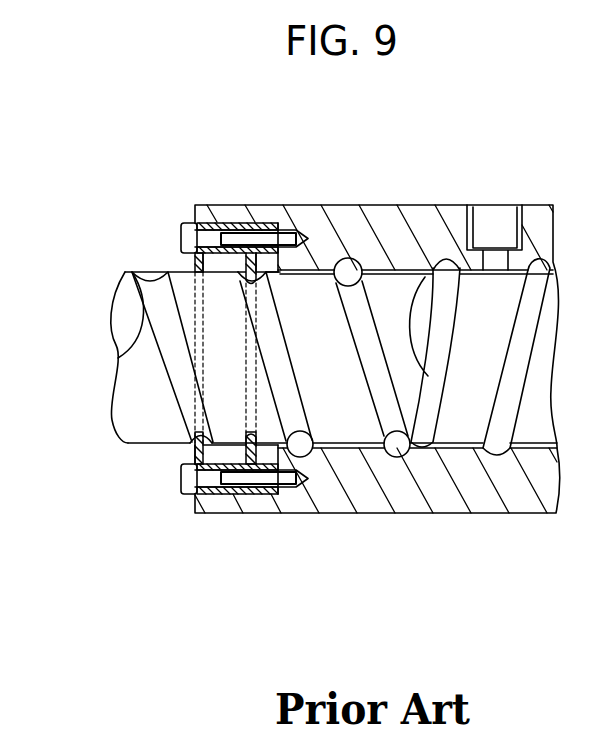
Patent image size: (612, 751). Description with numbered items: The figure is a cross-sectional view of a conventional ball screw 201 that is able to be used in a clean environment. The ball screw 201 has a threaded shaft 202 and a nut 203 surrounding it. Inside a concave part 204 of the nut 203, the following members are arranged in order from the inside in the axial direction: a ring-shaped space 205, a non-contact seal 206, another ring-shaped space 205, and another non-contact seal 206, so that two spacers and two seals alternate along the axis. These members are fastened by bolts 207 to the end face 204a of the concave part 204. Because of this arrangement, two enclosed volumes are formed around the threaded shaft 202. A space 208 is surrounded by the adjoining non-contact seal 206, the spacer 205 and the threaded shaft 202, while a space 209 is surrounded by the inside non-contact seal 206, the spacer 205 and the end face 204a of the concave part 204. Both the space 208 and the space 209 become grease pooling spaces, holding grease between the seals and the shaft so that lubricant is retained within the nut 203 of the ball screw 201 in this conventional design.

The ball screw 201 is at (472, 118).
The threaded shaft 202 is at (133, 392).
The nut 203 is at (398, 232).
The concave part 204 is at (277, 225).
The end face 204a is at (280, 504).
The ring-shaped space 205 is at (230, 497).
The non-contact seal 206 is at (198, 505).
The bolt 207 is at (178, 234).
The space 208 is at (225, 226).
The space 209 is at (318, 235).